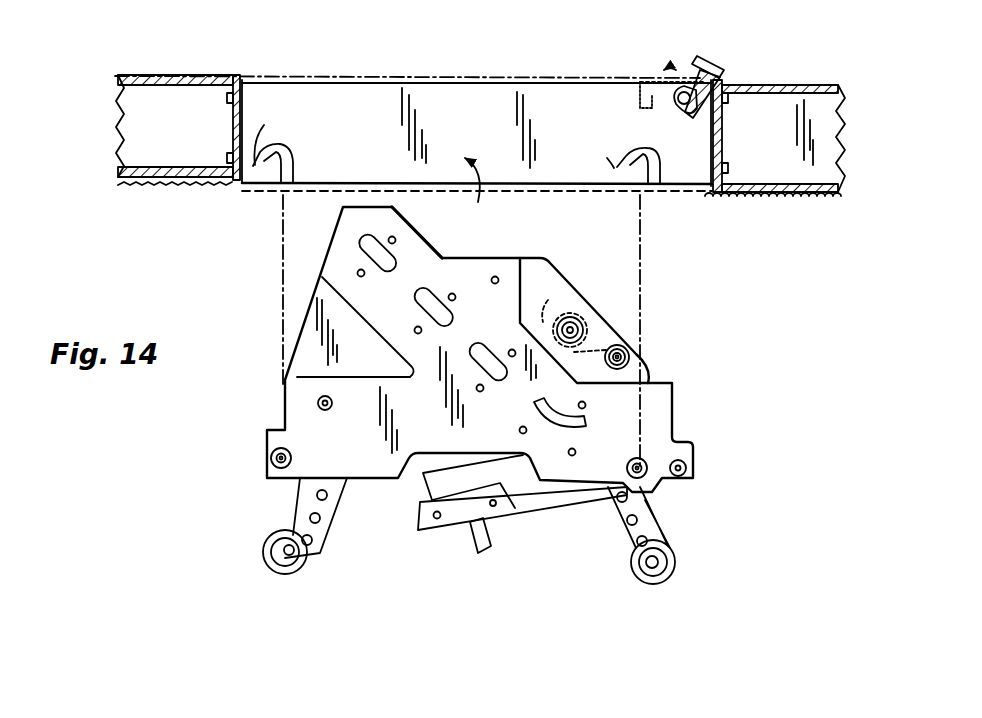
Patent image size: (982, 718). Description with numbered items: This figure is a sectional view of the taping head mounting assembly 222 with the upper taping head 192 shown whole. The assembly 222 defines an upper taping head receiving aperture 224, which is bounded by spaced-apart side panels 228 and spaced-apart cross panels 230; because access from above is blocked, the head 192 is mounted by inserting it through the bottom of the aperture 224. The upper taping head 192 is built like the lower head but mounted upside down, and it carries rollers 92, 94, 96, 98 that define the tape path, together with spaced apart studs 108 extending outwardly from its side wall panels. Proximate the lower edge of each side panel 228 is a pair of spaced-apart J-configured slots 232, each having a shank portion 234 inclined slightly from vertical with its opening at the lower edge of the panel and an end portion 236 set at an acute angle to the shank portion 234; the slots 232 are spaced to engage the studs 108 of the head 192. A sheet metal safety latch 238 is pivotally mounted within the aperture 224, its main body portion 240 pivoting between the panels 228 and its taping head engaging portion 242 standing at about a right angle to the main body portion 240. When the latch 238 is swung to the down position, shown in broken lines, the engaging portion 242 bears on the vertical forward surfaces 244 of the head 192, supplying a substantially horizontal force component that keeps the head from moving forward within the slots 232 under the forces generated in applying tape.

The roller 92 is at (566, 315).
The roller 94 is at (638, 368).
The roller 96 is at (640, 566).
The roller 98 is at (312, 552).
The studs 108 is at (289, 456).
The upper taping head 192 is at (547, 396).
The taping head mounting assembly 222 is at (350, 72).
The upper taping head receiving aperture 224 is at (556, 108).
The side panels 228 is at (460, 108).
The cross panels 230 is at (233, 127).
The J-configured slots 232 is at (286, 146).
The shank portion 234 is at (288, 168).
The end portion 236 is at (434, 130).
The safety latch 238 is at (722, 62).
The main body portion 240 is at (726, 84).
The taping head engaging portion 242 is at (712, 62).
The vertical forward surfaces 244 is at (675, 405).